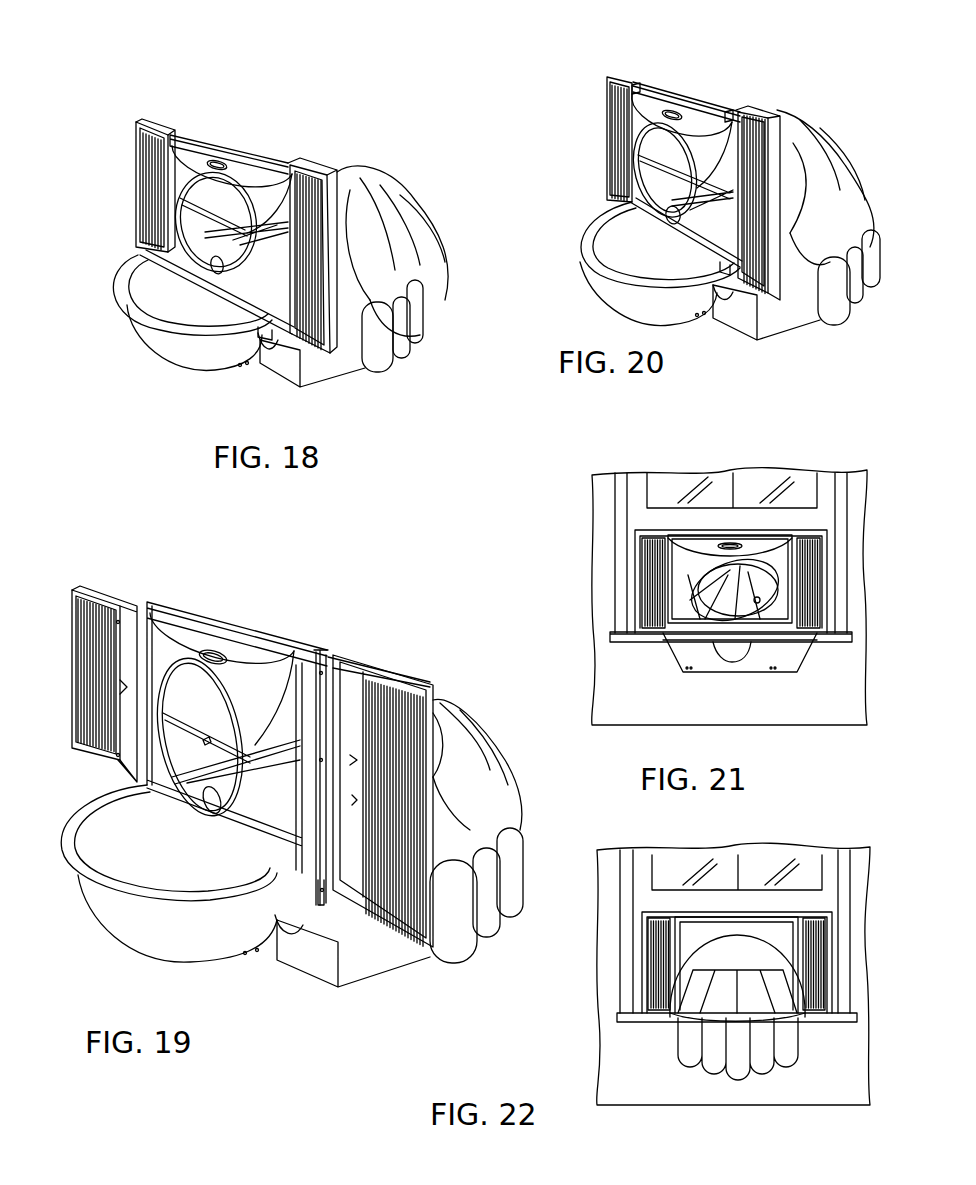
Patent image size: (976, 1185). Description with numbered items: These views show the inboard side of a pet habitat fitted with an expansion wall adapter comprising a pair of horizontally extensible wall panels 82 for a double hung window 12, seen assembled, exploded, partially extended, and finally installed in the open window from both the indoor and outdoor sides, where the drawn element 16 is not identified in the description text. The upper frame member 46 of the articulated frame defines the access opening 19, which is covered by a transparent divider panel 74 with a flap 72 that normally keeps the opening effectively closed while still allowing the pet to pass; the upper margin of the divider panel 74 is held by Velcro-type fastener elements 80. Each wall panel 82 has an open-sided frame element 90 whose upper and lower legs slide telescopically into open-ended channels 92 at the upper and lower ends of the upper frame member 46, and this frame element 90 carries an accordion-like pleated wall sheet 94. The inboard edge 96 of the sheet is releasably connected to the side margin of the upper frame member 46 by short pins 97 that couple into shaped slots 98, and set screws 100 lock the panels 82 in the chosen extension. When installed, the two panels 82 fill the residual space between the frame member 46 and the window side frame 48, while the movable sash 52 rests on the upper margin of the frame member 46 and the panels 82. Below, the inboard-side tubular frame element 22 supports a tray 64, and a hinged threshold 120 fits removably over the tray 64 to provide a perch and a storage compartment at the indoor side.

In FIG. 21, the window 12 is at (600, 537).
In FIG. 22, the window 12 is at (840, 895).
In FIG. 18, the user's head 16 is at (400, 240).
In FIG. 20, the user's head 16 is at (817, 133).
In FIG. 19, the user's head 16 is at (480, 750).
In FIG. 22, the user's head 16 is at (747, 977).
In FIG. 21, the access opening 19 is at (695, 592).
In FIG. 18, the inboard-side tubular frame element 22 is at (125, 303).
In FIG. 20, the inboard-side tubular frame element 22 is at (597, 263).
In FIG. 19, the inboard-side tubular frame element 22 is at (110, 885).
In FIG. 21, the inboard-side tubular frame element 22 is at (797, 633).
In FIG. 18, the upper frame member 46 is at (230, 145).
In FIG. 20, the upper frame member 46 is at (693, 90).
In FIG. 21, the window side frame 48 is at (630, 578).
In FIG. 22, the window side frame 48 is at (632, 972).
In FIG. 21, the movable window sash 52 is at (758, 477).
In FIG. 22, the movable window sash 52 is at (725, 855).
In FIG. 18, the tray 64 is at (198, 363).
In FIG. 21, the tray 64 is at (733, 667).
In FIG. 19, the flap 72 is at (237, 731).
In FIG. 21, the flap 72 is at (767, 577).
In FIG. 18, the divider panel 74 is at (267, 205).
In FIG. 20, the divider panel 74 is at (723, 155).
In FIG. 19, the divider panel 74 is at (282, 810).
In FIG. 19, the fastener elements 80 is at (213, 652).
In FIG. 18, the horizontally extensible wall panels 82 is at (280, 193).
In FIG. 20, the horizontally extensible wall panels 82 is at (750, 152).
In FIG. 19, the horizontally extensible wall panels 82 is at (265, 775).
In FIG. 21, the horizontally extensible wall panels 82 is at (640, 527).
In FIG. 22, the horizontally extensible wall panels 82 is at (648, 1018).
In FIG. 18, the open-sided frame element 90 is at (137, 163).
In FIG. 19, the open-sided frame element 90 is at (75, 622).
In FIG. 19, the open-ended channels 92 is at (323, 648).
In FIG. 18, the pleated wall sheet 94 is at (155, 208).
In FIG. 19, the pleated wall sheet 94 is at (102, 703).
In FIG. 19, the inboard edge 96 is at (127, 687).
In FIG. 19, the pins 97 is at (118, 622).
In FIG. 19, the slots 98 is at (328, 773).
In FIG. 20, the set screws 100 is at (627, 67).
In FIG. 18, the threshold 120 is at (138, 282).
In FIG. 20, the threshold 120 is at (598, 230).
In FIG. 19, the threshold 120 is at (92, 832).